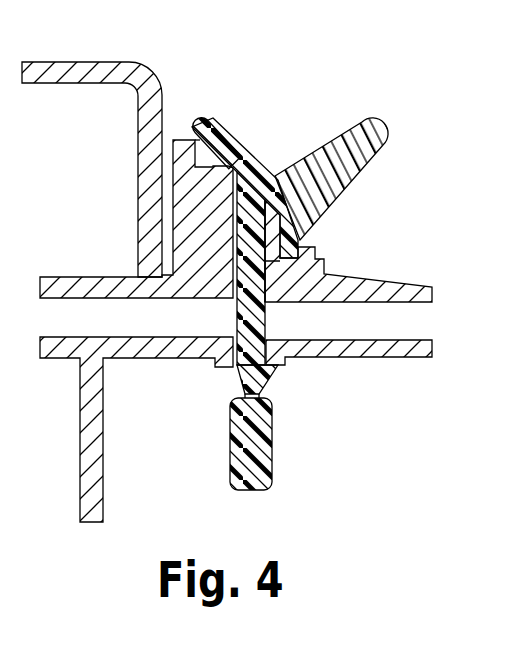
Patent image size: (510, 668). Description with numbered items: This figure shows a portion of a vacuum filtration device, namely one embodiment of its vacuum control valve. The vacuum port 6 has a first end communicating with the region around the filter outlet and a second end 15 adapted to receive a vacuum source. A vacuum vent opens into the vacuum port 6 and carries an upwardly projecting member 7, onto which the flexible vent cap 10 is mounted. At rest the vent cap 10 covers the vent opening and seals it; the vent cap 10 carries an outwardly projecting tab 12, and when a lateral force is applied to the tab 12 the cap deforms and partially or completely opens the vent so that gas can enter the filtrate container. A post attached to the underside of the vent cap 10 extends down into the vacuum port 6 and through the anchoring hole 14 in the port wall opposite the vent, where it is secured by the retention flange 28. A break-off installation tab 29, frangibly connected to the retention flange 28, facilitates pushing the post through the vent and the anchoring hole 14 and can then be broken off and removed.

The vacuum port 6 is at (173, 324).
The upwardly projecting member 7 is at (230, 124).
The vent cap 10 is at (272, 172).
The outwardly projecting tab 12 is at (372, 130).
The anchoring hole 14 is at (284, 360).
The second end 15 is at (432, 287).
The retention flange 28 is at (228, 374).
The break-off installation tab 29 is at (263, 465).